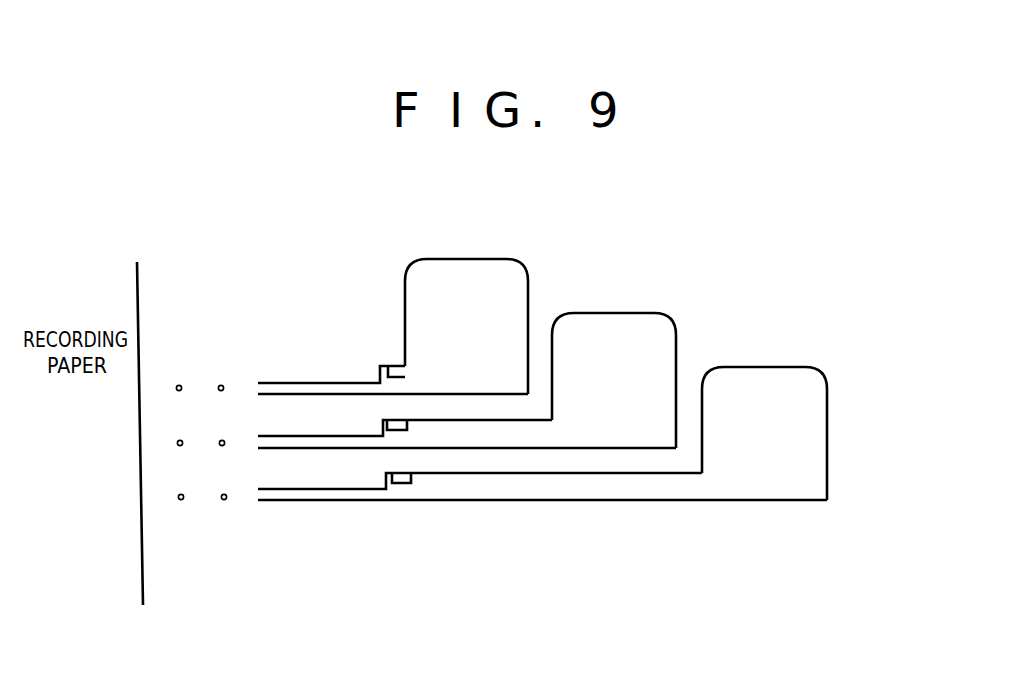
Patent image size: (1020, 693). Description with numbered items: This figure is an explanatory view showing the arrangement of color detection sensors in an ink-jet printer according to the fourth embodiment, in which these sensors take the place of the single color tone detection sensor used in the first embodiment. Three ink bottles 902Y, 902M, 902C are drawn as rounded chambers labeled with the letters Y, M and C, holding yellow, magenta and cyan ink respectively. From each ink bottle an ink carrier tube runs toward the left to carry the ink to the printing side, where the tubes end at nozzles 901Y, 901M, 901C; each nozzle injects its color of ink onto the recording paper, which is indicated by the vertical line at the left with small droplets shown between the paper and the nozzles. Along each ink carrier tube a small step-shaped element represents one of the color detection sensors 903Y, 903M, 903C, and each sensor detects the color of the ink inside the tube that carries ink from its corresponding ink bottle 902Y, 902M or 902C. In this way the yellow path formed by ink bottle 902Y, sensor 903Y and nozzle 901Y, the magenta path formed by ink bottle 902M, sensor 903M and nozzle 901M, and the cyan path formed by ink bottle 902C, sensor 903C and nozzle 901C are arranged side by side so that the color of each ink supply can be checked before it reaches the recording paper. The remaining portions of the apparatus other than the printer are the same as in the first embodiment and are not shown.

The nozzle 901Y is at (292, 383).
The ink bottle 902Y is at (518, 273).
The color detection sensor 903Y is at (387, 366).
The nozzle 901M is at (293, 436).
The ink bottle 902M is at (667, 324).
The color detection sensor 903M is at (407, 428).
The nozzle 901C is at (265, 497).
The ink bottle 902C is at (818, 376).
The color detection sensor 903C is at (392, 484).